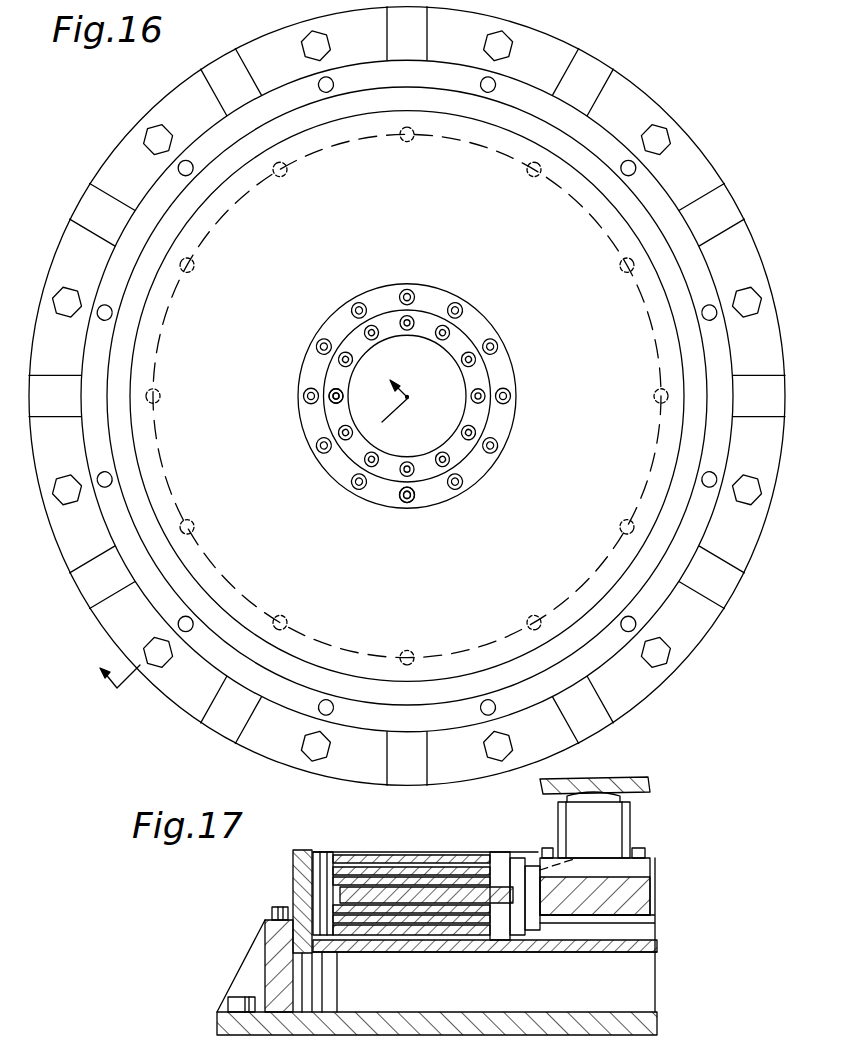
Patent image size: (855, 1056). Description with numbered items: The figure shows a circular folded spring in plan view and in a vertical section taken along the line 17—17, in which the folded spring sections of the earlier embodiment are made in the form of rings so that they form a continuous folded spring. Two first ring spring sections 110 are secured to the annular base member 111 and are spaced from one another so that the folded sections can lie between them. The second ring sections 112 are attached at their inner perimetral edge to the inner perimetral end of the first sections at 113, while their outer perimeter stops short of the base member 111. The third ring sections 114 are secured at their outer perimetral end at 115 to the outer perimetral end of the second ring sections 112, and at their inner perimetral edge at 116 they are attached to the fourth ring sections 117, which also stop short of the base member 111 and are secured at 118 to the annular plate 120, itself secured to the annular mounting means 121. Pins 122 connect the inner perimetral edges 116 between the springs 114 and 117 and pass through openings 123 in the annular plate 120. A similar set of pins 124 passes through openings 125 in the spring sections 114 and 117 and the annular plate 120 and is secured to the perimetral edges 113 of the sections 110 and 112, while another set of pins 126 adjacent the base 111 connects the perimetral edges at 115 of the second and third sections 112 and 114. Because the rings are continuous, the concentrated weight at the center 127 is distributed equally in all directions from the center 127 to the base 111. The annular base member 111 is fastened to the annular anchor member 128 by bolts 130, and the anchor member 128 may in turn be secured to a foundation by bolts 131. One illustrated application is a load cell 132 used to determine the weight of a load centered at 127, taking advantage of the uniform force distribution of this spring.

In FIG. 16, the section line 17— 17 is at (239, 520).
In FIG. 16, the first ring spring sections 110 is at (367, 538).
In FIG. 17, the first ring spring sections 110 is at (432, 885).
In FIG. 16, the annular base member 111 is at (128, 432).
In FIG. 17, the annular base member 111 is at (302, 880).
In FIG. 17, the second ring sections 112 is at (450, 862).
In FIG. 17, the inner perimetral end 113 is at (485, 870).
In FIG. 16, the third ring sections 114 is at (504, 424).
In FIG. 17, the third ring sections 114 is at (388, 895).
In FIG. 17, the outer perimetral end 115 is at (328, 875).
In FIG. 17, the inner perimetral edge 116 is at (522, 870).
In FIG. 17, the fourth ring sections 117 is at (405, 900).
In FIG. 17, the securing point 118 is at (340, 895).
In FIG. 16, the annular plate 120 is at (480, 374).
In FIG. 17, the annular plate 120 is at (355, 890).
In FIG. 16, the annular mounting means 121 is at (440, 436).
In FIG. 17, the annular mounting means 121 is at (640, 890).
In FIG. 16, the pins 122 is at (357, 400).
In FIG. 17, the pins 122 is at (525, 920).
In FIG. 16, the openings 123 is at (340, 400).
In FIG. 17, the openings 123 is at (579, 855).
In FIG. 16, the pins 124 is at (494, 452).
In FIG. 17, the pins 124 is at (490, 935).
In FIG. 16, the openings 125 is at (406, 496).
In FIG. 17, the openings 125 is at (508, 850).
In FIG. 16, the pins 126 is at (188, 273).
In FIG. 17, the pins 126 is at (317, 856).
In FIG. 16, the center 127 is at (408, 398).
In FIG. 17, the center 127 is at (596, 778).
In FIG. 16, the annular anchor member 128 is at (88, 207).
In FIG. 17, the annular anchor member 128 is at (248, 976).
In FIG. 16, the bolts 130 is at (100, 305).
In FIG. 17, the bolts 130 is at (272, 912).
In FIG. 16, the bolts 131 is at (143, 133).
In FIG. 17, the bolts 131 is at (240, 998).
In FIG. 17, the load cell 132 is at (610, 828).